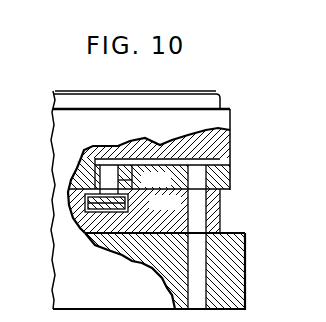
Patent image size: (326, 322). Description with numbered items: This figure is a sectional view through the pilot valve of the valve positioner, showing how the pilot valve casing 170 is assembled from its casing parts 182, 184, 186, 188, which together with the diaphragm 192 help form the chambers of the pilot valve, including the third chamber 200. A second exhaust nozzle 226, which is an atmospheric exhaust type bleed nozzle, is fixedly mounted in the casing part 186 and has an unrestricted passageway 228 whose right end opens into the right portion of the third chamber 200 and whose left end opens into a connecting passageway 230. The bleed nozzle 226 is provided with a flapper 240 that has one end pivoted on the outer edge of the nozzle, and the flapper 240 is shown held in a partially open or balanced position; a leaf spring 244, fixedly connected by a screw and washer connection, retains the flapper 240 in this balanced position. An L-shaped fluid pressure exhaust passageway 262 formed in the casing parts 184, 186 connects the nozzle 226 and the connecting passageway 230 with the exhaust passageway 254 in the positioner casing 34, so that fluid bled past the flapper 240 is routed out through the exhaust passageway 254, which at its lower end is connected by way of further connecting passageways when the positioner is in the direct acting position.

The pilot valve casing 170 is at (207, 89).
The casing part 182 is at (105, 106).
The diaphragm 192 is at (142, 108).
The casing part 184 is at (67, 137).
The connecting passageway 230 is at (110, 162).
The L-shaped fluid pressure exhaust passageway 262 is at (198, 178).
The unrestricted passageway 228 is at (128, 183).
The second exhaust nozzle 226 is at (137, 186).
The casing part 186 is at (74, 174).
The casing part 188 is at (68, 201).
The third chamber 200 is at (81, 221).
The leaf spring 244 is at (98, 214).
The flapper 240 is at (110, 236).
The positioner casing 34 is at (58, 266).
The exhaust passageway 254 is at (192, 278).